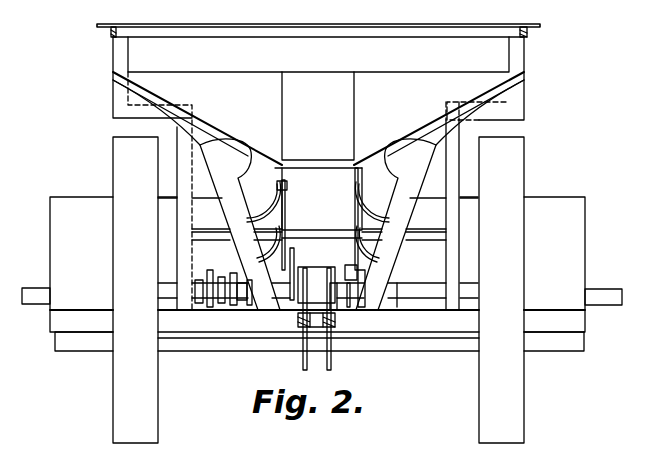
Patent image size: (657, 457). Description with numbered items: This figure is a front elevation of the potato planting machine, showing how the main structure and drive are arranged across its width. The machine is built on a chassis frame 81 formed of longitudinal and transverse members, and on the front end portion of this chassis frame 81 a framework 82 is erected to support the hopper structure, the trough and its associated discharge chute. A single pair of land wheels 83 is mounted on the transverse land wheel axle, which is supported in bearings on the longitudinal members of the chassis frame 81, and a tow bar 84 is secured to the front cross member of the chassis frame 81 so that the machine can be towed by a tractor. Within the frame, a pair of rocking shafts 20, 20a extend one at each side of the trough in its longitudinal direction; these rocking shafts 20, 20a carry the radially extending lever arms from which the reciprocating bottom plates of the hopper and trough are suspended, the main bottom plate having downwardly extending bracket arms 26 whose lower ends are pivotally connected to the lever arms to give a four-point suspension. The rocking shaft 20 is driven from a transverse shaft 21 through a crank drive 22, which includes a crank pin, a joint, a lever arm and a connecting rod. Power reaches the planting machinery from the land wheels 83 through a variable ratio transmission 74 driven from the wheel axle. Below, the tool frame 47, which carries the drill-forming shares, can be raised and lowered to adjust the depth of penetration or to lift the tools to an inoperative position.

The rocking shaft 20 is at (231, 221).
The rocking shaft 20a is at (405, 175).
The transverse shaft 21 is at (313, 267).
The crank drive 22 is at (286, 185).
The bracket arm 26 is at (359, 214).
The tool frame 47 is at (218, 348).
The variable ratio transmission 74 is at (207, 281).
The chassis frame 81 is at (402, 328).
The framework 82 is at (519, 111).
The land wheel 83 is at (519, 174).
The tow bar 84 is at (337, 322).